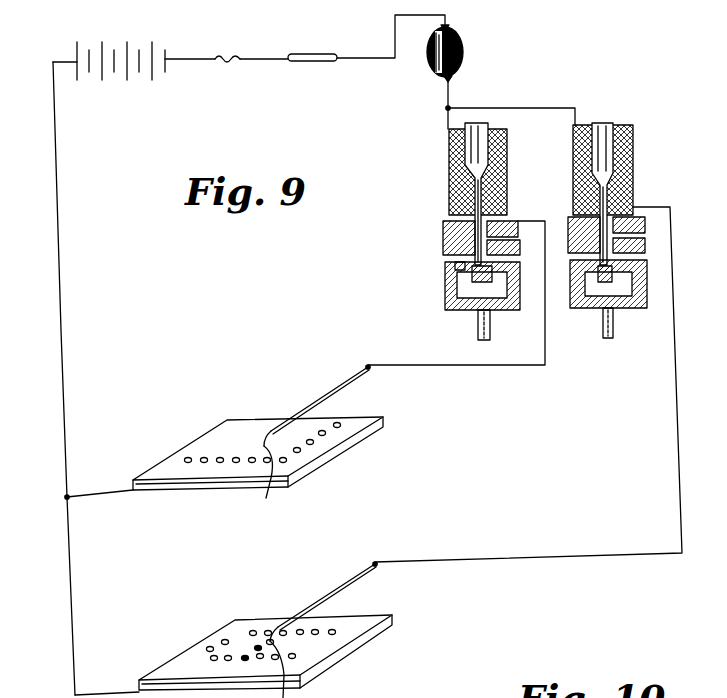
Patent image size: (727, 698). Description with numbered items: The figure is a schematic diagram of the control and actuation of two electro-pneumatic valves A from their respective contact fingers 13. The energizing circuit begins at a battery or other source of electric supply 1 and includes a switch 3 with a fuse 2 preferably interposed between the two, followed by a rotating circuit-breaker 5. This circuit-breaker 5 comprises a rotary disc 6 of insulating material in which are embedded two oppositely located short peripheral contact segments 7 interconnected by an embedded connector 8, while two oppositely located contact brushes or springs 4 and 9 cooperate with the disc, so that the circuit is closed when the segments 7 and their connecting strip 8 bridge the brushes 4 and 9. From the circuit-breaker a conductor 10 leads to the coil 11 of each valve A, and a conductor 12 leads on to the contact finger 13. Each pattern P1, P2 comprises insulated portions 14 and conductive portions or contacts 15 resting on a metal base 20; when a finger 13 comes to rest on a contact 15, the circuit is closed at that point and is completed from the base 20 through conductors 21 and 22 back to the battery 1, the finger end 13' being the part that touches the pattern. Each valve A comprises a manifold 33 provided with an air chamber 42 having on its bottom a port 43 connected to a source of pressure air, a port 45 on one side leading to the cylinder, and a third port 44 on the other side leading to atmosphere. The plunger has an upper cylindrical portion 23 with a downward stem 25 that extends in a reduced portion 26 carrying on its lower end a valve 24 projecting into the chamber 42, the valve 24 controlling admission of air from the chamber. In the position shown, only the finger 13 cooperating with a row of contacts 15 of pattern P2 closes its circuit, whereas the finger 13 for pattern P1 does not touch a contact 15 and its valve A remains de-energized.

The battery 1 is at (156, 76).
The fuse 2 is at (228, 62).
The switch 3 is at (318, 61).
The contact brush 4 is at (449, 25).
The rotating circuit-breaker 5 is at (463, 45).
The rotary disc 6 is at (463, 58).
The contact segments 7 is at (440, 27).
The connector 8 is at (436, 55).
The contact brush 9 is at (452, 80).
The conductor 10 is at (442, 102).
The coil 11 is at (452, 158).
The conductor 12 is at (484, 367).
The contact finger 13 is at (320, 504).
The contact wire end 13' is at (270, 572).
The insulated portions 14 is at (233, 632).
The contacts 15 is at (222, 457).
The metal base 20 is at (320, 465).
The conductor 21 is at (107, 500).
The conductor 22 is at (60, 355).
The upper cylindrical portion of plunger 23 is at (478, 123).
The valve 24 is at (470, 284).
The stem 25 is at (447, 232).
The reduced portion 26 is at (450, 250).
The manifold 33 is at (519, 258).
The air chamber 42 is at (457, 298).
The port 43 is at (478, 330).
The port 44 is at (500, 236).
The port 45 is at (455, 262).
The electro-pneumatic valve A is at (447, 212).
The pattern P1 is at (360, 421).
The pattern P2 is at (360, 626).